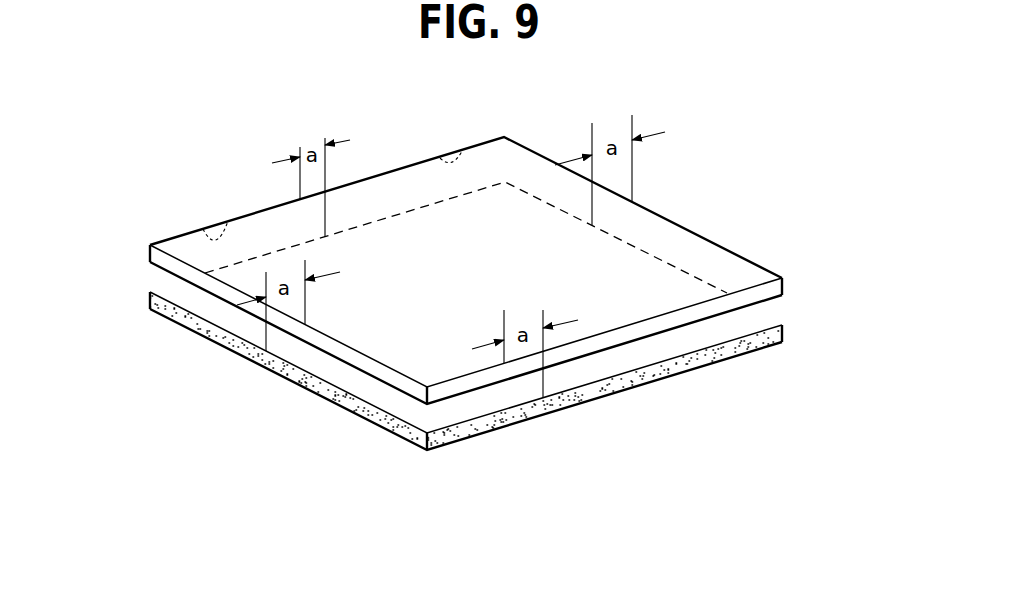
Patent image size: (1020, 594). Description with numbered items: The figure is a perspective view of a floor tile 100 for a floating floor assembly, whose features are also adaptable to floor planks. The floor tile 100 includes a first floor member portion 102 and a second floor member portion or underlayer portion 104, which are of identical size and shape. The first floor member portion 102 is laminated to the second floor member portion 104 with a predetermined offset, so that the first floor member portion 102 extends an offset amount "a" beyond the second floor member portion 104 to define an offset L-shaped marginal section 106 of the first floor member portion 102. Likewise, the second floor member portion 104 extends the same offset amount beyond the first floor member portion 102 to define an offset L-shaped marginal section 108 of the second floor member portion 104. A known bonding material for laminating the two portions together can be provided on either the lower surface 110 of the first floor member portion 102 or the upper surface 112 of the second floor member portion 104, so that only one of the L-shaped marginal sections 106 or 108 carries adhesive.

The floor tile 100 is at (235, 148).
The first floor member portion 102 is at (773, 270).
The second floor member portion 104 is at (787, 331).
The offset L-shaped marginal section 106 is at (453, 156).
The offset L-shaped marginal section 108 is at (498, 400).
The lower surface 110 is at (203, 229).
The upper surface 112 is at (576, 378).